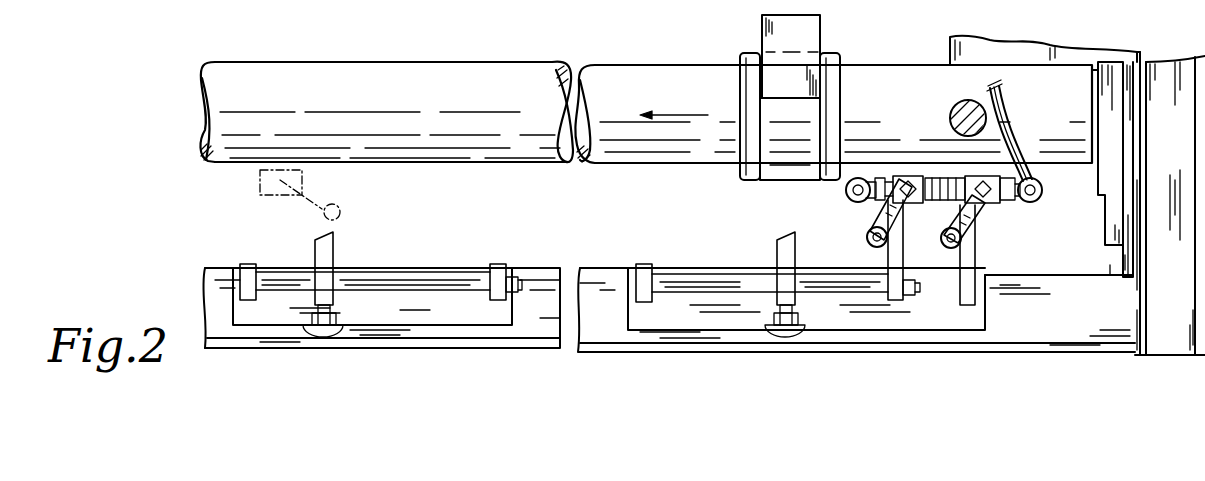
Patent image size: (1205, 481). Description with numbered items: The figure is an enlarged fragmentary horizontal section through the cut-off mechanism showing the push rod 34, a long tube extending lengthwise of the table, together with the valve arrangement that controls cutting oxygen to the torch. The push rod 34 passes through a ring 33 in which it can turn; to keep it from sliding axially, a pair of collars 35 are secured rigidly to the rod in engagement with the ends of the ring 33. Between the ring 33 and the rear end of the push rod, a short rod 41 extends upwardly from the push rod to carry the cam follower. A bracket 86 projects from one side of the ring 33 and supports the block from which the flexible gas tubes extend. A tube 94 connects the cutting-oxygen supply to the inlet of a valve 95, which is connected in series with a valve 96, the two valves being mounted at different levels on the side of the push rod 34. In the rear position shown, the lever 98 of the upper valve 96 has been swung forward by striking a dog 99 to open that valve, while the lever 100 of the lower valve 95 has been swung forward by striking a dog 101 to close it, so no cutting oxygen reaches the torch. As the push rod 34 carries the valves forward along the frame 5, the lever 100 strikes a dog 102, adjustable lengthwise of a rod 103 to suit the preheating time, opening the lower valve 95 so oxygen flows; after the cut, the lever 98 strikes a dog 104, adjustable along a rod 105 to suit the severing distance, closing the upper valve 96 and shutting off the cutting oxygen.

The frame 5 is at (1020, 347).
The ring 33 is at (792, 178).
The push rod 34 is at (607, 162).
The collars 35 is at (753, 53).
The short rod 41 is at (952, 118).
The bracket 86 is at (813, 33).
The tube 94 is at (1019, 128).
The valve 95 is at (1010, 200).
The valve 96 is at (868, 196).
The lever 98 is at (869, 234).
The dog 99 is at (893, 261).
The lever 100 is at (977, 212).
The dog 101 is at (968, 264).
The dog 102 is at (778, 251).
The rod 103 is at (677, 283).
The dog 104 is at (333, 254).
The rod 105 is at (424, 285).